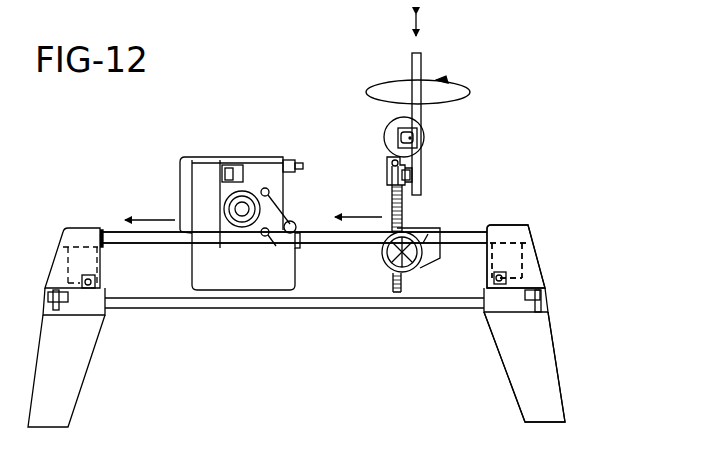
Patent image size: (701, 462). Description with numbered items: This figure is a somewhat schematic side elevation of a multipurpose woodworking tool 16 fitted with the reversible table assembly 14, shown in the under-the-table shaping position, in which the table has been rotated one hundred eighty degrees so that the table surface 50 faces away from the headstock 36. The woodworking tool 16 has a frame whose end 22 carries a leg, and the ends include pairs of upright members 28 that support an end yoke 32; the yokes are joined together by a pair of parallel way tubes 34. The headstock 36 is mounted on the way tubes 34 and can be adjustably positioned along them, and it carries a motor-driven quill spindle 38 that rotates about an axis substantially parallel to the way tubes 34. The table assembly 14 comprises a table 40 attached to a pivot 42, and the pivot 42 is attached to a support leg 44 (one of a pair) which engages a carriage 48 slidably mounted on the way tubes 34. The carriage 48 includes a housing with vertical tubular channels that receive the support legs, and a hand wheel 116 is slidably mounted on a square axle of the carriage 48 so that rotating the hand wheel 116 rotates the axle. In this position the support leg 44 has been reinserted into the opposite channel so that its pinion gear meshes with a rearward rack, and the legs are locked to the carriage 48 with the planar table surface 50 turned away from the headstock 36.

The table assembly 14 is at (380, 123).
The multipurpose woodworking tool 16 is at (548, 332).
The end 22 is at (490, 336).
The upright members 28 is at (533, 266).
The end yoke 32 is at (512, 228).
The way tubes 34 is at (465, 232).
The headstock 36 is at (203, 170).
The quill spindle 38 is at (297, 160).
The table 40 is at (428, 118).
The pivot 42 is at (387, 140).
The support leg 44 is at (392, 197).
The carriage 48 is at (418, 230).
The table surface 50 is at (424, 160).
The hand wheel 116 is at (387, 262).